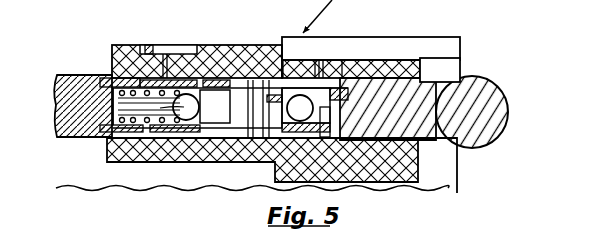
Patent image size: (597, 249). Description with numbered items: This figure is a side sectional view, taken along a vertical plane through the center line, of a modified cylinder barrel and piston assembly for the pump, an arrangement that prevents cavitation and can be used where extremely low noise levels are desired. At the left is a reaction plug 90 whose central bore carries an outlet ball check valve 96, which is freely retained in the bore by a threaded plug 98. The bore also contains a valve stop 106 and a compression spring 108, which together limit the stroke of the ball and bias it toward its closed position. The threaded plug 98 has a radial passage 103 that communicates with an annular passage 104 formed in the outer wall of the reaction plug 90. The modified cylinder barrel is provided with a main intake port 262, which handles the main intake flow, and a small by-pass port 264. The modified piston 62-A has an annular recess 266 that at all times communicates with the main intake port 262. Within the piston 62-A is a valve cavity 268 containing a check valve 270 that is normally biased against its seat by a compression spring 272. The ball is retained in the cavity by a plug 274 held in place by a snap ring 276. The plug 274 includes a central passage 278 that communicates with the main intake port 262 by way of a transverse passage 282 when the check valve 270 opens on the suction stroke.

The reaction plug 90 is at (72, 74).
The valve stop 106 is at (106, 108).
The compression spring 108 is at (138, 78).
The outlet ball check valve 96 is at (118, 137).
The annular passage 104 is at (130, 150).
The radial passage 103 is at (133, 128).
The threaded plug 98 is at (193, 143).
The snap ring 276 is at (240, 143).
The central passage 278 is at (252, 133).
The valve cavity 268 is at (296, 138).
The annular recess 266 is at (333, 143).
The plug 274 is at (272, 95).
The compression spring 272 is at (277, 97).
The main intake port 262 is at (345, 62).
The by-pass port 264 is at (300, 52).
The check valve 270 is at (340, 68).
The modified piston 62-A is at (508, 107).
The transverse passage 282 is at (418, 87).